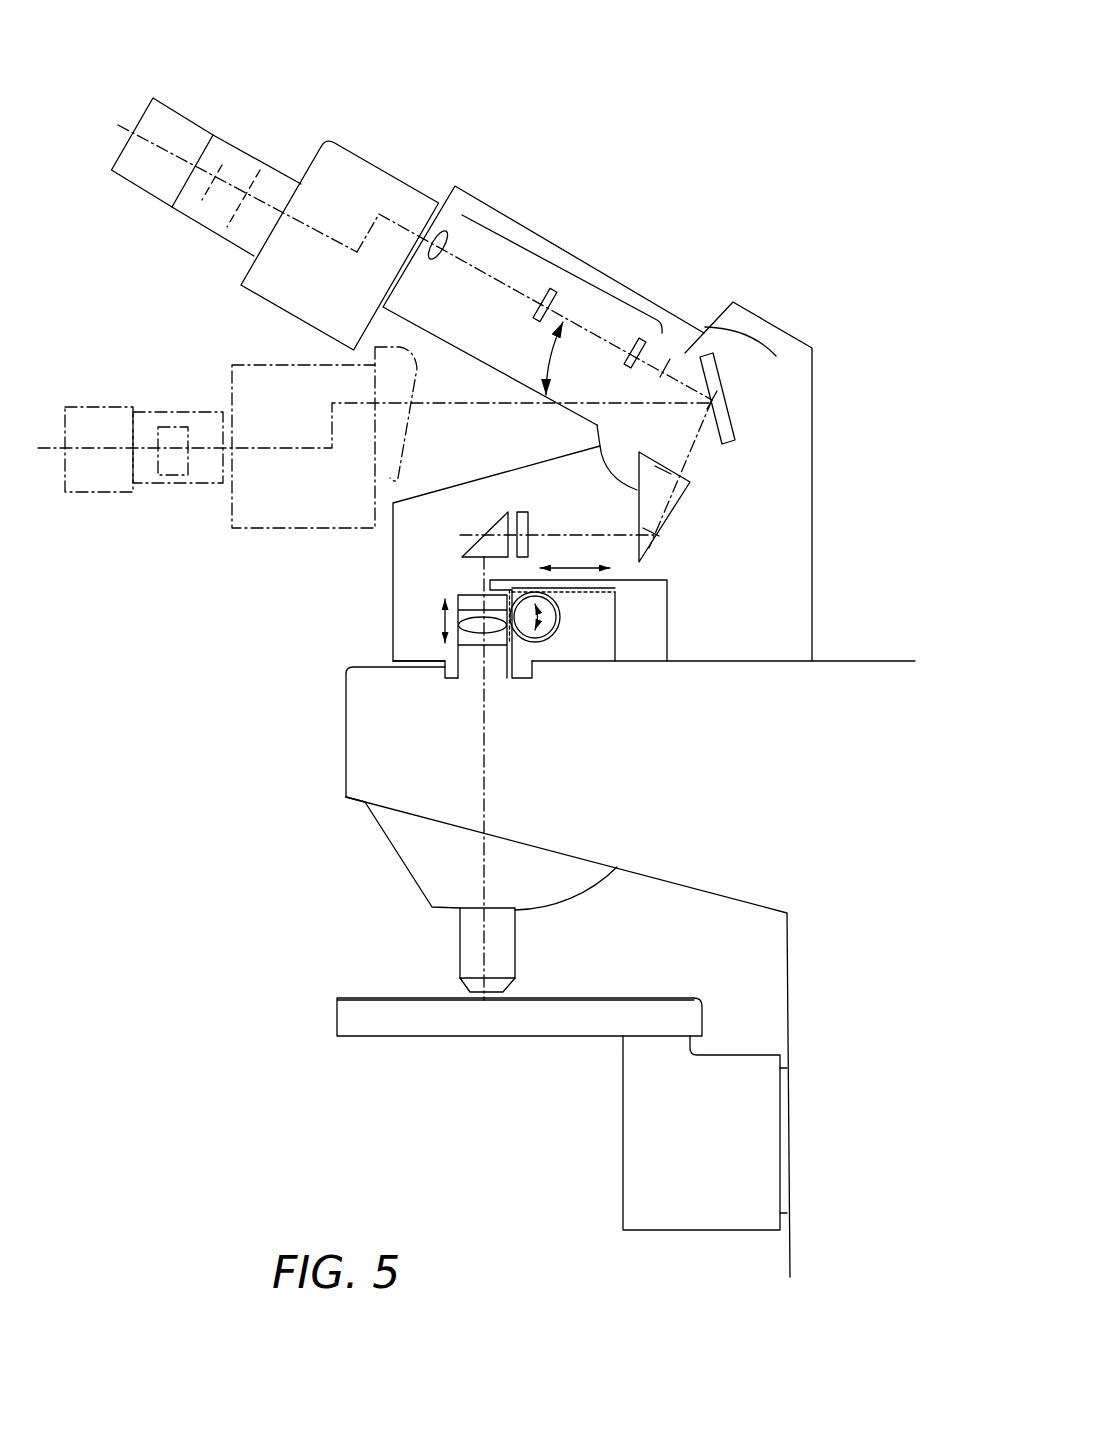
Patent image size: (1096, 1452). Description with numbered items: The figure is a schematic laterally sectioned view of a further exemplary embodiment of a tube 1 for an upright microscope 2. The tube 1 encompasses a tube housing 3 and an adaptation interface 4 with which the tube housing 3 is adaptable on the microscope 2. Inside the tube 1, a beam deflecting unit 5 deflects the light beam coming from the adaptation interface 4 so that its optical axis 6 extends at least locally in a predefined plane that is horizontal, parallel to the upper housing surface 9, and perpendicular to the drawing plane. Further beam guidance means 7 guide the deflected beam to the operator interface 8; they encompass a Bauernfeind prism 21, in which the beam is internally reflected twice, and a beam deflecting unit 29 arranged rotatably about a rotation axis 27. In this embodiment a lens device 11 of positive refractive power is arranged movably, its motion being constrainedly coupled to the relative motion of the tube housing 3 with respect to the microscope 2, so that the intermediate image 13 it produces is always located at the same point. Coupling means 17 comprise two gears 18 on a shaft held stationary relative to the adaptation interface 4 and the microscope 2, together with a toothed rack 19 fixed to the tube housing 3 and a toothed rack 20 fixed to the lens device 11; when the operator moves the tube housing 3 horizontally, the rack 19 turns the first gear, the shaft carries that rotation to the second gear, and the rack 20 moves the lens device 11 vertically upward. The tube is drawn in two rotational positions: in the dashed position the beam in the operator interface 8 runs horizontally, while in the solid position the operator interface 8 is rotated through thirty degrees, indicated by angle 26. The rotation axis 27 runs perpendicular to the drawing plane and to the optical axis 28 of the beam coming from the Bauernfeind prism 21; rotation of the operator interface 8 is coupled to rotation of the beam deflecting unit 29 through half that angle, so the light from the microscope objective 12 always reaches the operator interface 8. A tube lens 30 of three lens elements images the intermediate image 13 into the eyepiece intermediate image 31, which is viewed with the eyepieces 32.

The tube 1 is at (787, 472).
The upright microscope 2 is at (396, 690).
The tube housing 3 is at (500, 207).
The adaptation interface 4 is at (447, 650).
The beam deflecting unit 5 is at (478, 545).
The optical axis 6 is at (556, 535).
The further beam guidance means 7 is at (449, 212).
The operator interface 8 is at (198, 100).
The upper housing surface 9 is at (868, 660).
The lens device 11 is at (438, 612).
The microscope objective 12 is at (470, 942).
The intermediate image 13 is at (735, 303).
The coupling means 17 is at (638, 652).
The gears 18 is at (556, 629).
The toothed rack 19 is at (600, 592).
The toothed rack 20 is at (497, 650).
The Bauernfeind prism 21 is at (670, 522).
The angle 26 is at (553, 364).
The rotation axis 27 is at (700, 406).
The optical axis 28 is at (688, 440).
The beam deflecting unit 29 is at (728, 424).
The tube lens 30 is at (555, 265).
The eyepiece intermediate image 31 is at (231, 148).
The eyepieces 32 is at (166, 104).